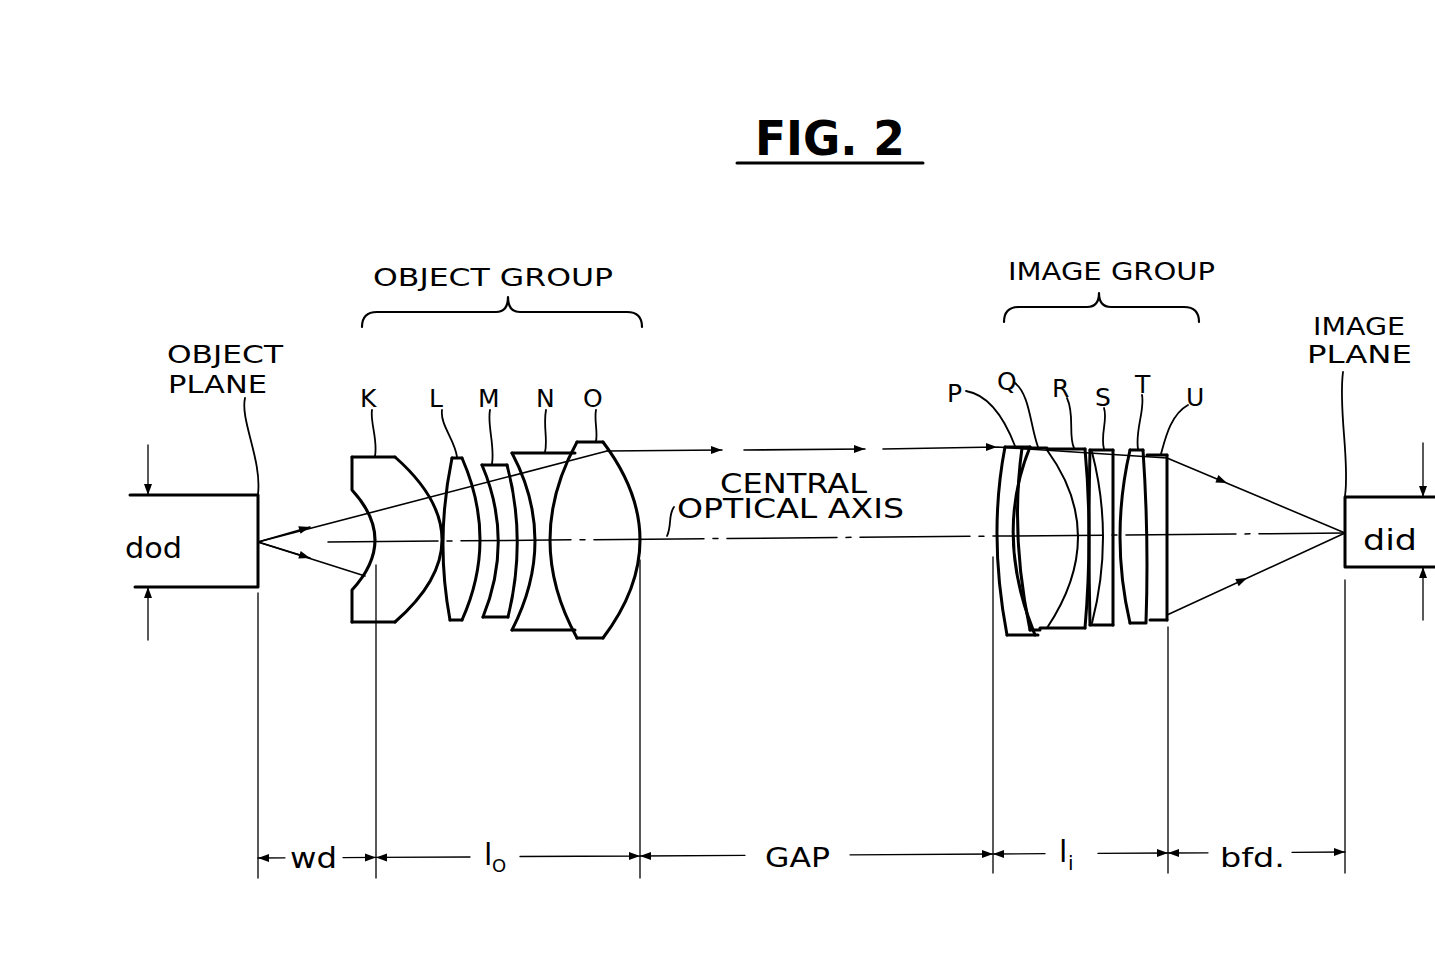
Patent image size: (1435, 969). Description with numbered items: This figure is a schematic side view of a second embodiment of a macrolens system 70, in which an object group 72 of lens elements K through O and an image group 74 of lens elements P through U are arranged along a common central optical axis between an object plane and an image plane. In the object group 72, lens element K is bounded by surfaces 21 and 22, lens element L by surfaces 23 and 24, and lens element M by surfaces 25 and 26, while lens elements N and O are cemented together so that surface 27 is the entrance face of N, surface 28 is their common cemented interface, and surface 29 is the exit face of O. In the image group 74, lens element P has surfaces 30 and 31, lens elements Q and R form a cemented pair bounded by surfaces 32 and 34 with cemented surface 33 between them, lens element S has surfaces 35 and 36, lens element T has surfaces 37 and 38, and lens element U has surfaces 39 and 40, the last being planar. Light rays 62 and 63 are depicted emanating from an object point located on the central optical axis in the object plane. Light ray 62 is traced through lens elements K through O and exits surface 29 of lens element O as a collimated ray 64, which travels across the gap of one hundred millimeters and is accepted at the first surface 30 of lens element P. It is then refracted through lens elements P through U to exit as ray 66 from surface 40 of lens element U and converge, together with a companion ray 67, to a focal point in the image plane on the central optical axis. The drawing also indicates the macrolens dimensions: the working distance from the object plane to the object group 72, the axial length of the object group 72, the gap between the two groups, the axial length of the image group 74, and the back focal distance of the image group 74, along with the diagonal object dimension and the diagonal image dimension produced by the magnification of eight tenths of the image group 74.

The first surface of lens element K 21 is at (350, 582).
The second surface of lens element K 22 is at (420, 618).
The first surface of lens element L 23 is at (437, 600).
The second surface of lens element L 24 is at (467, 623).
The first surface of lens element M 25 is at (483, 597).
The second surface of lens element M 26 is at (528, 620).
The first surface of lens element N 27 is at (552, 612).
The cemented surface between lens elements N and O 28 is at (562, 633).
The exit surface of lens element O 29 is at (623, 618).
The first surface of lens element P 30 is at (998, 600).
The second surface of lens element P 31 is at (996, 620).
The first surface of lens element Q 32 is at (1033, 637).
The cemented surface between lens elements Q and R 33 is at (1062, 635).
The second surface of lens element R 34 is at (1080, 630).
The first surface of lens element S 35 is at (1103, 627).
The second surface of lens element S 36 is at (1140, 627).
The first surface of lens element T 37 is at (1151, 622).
The second surface of lens element T 38 is at (1167, 643).
The first surface of lens element U 39 is at (1163, 614).
The exit surface of lens element U 40 is at (1168, 580).
The light ray 62 is at (343, 515).
The light ray 63 is at (328, 567).
The collimated ray 64 is at (686, 449).
The exit ray 66 is at (1247, 491).
The companion ray 67 is at (1292, 559).
The macrolens system 70 is at (862, 254).
The object group 72 is at (484, 237).
The image group 74 is at (1125, 232).